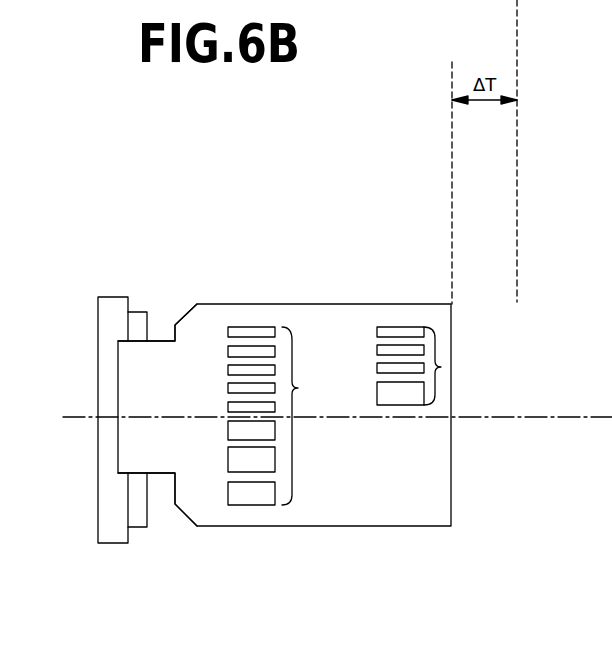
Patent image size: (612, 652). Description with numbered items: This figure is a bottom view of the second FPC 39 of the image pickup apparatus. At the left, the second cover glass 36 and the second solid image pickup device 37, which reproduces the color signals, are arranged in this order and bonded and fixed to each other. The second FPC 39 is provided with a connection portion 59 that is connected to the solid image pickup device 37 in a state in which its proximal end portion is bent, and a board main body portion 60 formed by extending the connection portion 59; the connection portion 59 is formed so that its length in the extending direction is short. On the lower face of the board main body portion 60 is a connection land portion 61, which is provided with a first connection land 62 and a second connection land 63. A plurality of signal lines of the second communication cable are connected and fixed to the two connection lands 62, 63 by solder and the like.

The second cover glass 36 is at (112, 529).
The second solid image pickup device 37 is at (140, 516).
The second FPC 39 is at (278, 309).
The connection portion 59 is at (162, 357).
The board main body portion 60 is at (365, 320).
The connection land portion 61 is at (425, 183).
The first connection land 62 is at (298, 388).
The second connection land 63 is at (441, 367).